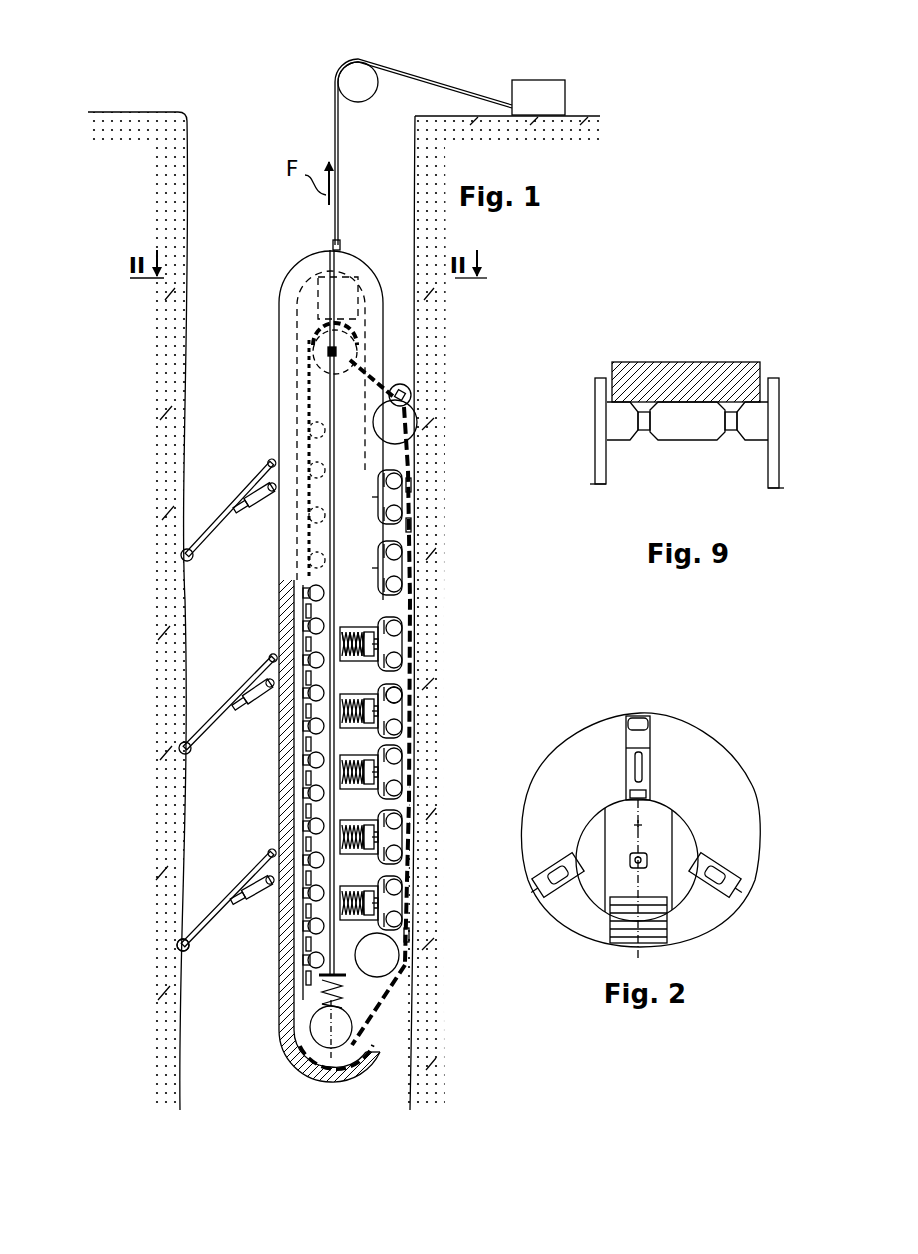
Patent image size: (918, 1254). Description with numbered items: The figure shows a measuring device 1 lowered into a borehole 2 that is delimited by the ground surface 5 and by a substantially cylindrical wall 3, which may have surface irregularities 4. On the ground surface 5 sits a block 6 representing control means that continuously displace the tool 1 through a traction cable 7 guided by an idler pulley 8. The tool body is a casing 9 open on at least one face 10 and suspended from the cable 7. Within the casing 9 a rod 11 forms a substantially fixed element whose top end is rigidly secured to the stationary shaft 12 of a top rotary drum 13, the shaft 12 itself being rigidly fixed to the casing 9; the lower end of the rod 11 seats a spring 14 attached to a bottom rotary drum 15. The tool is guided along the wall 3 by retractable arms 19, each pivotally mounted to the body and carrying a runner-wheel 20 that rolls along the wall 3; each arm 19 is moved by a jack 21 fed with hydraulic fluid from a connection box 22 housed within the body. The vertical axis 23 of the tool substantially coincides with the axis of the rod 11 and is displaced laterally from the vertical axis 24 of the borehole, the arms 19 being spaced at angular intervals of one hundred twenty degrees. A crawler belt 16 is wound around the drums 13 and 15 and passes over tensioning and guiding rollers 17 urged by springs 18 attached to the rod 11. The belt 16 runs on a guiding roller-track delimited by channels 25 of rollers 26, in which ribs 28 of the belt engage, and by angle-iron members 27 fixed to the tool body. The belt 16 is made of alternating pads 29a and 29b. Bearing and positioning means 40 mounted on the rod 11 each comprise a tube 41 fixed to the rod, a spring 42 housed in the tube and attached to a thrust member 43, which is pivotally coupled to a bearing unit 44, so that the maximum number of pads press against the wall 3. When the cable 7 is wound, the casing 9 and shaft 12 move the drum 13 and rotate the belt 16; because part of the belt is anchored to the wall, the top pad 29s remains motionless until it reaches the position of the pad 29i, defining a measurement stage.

In FIG. 1, the measuring device 1 is at (270, 348).
In FIG. 1, the borehole 2 is at (203, 140).
In FIG. 1, the borehole wall 3 is at (185, 212).
In FIG. 1, the surface irregularities 4 is at (185, 375).
In FIG. 1, the ground surface 5 is at (137, 112).
In FIG. 1, the control means 6 is at (540, 95).
In FIG. 1, the traction cable 7 is at (415, 76).
In FIG. 1, the idler pulley 8 is at (355, 80).
In FIG. 1, the casing 9 is at (296, 268).
In FIG. 2, the casing 9 is at (592, 826).
In FIG. 1, the open face 10 is at (380, 1040).
In FIG. 2, the open face 10 is at (607, 905).
In FIG. 1, the rod 11 is at (333, 775).
In FIG. 1, the stationary shaft 12 is at (352, 330).
In FIG. 1, the top rotary drum 13 is at (345, 353).
In FIG. 1, the spring 14 is at (320, 1002).
In FIG. 1, the bottom rotary drum 15 is at (318, 1032).
In FIG. 1, the crawler belt 16 is at (305, 603).
In FIG. 9, the crawler belt 16 is at (645, 380).
In FIG. 1, the tensioning and guiding rollers 17 is at (385, 418).
In FIG. 1, the springs 18 is at (345, 410).
In FIG. 1, the retractable arms 19 is at (205, 530).
In FIG. 2, the retractable arms 19 is at (652, 735).
In FIG. 1, the runner-wheel 20 is at (178, 960).
In FIG. 1, the jack 21 is at (256, 510).
In FIG. 2, the jack 21 is at (636, 782).
In FIG. 1, the connection box 22 is at (318, 298).
In FIG. 2, the vertical axis of the tool 23 is at (650, 860).
In FIG. 2, the vertical axis of the borehole 24 is at (646, 826).
In FIG. 9, the channels 25 is at (644, 430).
In FIG. 9, the rollers 26 is at (685, 425).
In FIG. 9, the angle-iron members 27 is at (779, 458).
In FIG. 9, the ribs 28 is at (727, 410).
In FIG. 1, the top pad 29s is at (410, 437).
In FIG. 1, the pad 29a is at (412, 485).
In FIG. 1, the pad 29b is at (412, 525).
In FIG. 1, the lower pad 29i is at (410, 935).
In FIG. 1, the bearing and positioning means 40 is at (385, 610).
In FIG. 1, the tube 41 is at (342, 628).
In FIG. 1, the spring 42 is at (346, 660).
In FIG. 1, the thrust member 43 is at (390, 685).
In FIG. 1, the bearing unit 44 is at (388, 638).